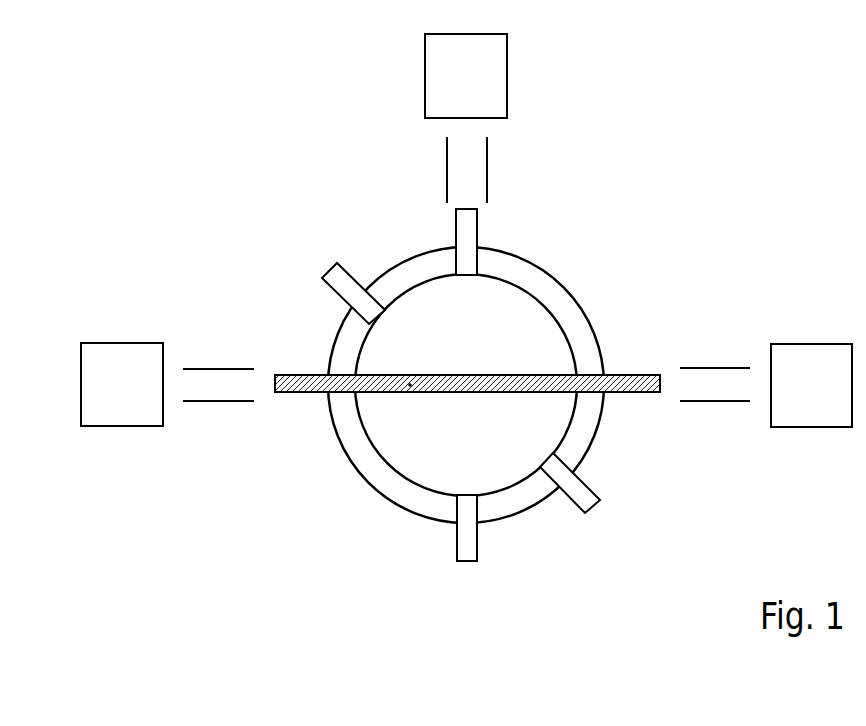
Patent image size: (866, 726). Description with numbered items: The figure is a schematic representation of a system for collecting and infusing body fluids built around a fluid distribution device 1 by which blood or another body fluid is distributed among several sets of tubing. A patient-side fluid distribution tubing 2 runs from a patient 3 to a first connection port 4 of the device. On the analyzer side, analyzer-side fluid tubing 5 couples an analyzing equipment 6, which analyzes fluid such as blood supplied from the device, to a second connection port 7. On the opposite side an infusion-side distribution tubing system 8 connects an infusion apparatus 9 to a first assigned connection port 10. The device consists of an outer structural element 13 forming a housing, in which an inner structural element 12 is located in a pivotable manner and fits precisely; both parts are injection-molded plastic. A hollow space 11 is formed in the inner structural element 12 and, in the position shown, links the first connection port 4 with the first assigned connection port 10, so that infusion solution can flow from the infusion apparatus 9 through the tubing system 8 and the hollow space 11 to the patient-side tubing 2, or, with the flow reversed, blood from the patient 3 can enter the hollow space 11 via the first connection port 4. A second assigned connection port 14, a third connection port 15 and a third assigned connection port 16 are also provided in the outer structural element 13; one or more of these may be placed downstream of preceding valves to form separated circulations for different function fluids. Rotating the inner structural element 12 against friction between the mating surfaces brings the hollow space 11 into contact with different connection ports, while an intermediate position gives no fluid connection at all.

The fluid distribution device 1 is at (185, 245).
The patient-side fluid distribution tubing 2 is at (222, 402).
The patient 3 is at (103, 365).
The first connection port 4 is at (289, 395).
The analyzer-side fluid tubing 5 is at (480, 183).
The analyzing equipment 6 is at (493, 90).
The second connection port 7 is at (481, 243).
The infusion-side distribution tubing system 8 is at (732, 367).
The infusion apparatus 9 is at (830, 357).
The first assigned connection port 10 is at (633, 394).
The hollow space 11 is at (405, 388).
The inner structural element 12 is at (535, 428).
The outer structural element 13 is at (567, 303).
The second assigned connection port 14 is at (457, 544).
The third connection port 15 is at (350, 273).
The third assigned connection port 16 is at (585, 515).